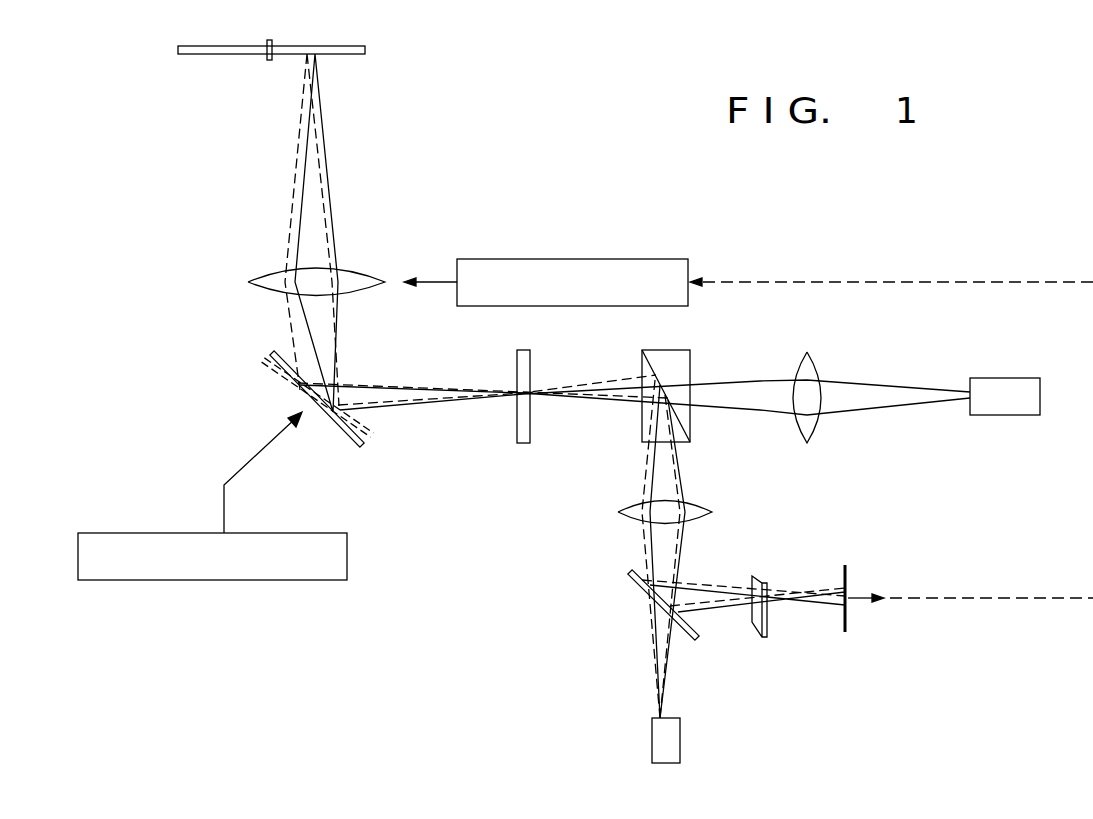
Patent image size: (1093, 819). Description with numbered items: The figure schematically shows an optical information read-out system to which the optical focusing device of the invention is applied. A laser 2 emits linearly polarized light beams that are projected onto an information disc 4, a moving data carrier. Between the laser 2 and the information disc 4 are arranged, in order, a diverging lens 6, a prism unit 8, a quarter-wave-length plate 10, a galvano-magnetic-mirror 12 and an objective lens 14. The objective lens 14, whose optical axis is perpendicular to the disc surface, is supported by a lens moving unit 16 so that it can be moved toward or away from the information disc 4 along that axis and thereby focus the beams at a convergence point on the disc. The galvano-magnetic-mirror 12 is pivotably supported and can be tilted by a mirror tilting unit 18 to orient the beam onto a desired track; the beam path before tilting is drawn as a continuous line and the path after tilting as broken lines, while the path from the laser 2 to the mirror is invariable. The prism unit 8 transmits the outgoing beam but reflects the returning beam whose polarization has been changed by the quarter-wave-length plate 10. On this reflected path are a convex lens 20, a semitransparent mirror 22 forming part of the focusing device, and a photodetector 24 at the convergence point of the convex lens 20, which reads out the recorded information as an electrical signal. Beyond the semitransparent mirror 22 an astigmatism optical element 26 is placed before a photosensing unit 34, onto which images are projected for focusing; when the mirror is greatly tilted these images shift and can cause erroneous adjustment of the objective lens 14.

The laser 2 is at (993, 386).
The information disc 4 is at (345, 55).
The diverging lens 6 is at (806, 368).
The prism unit 8 is at (682, 350).
The quarter-wave-length plate 10 is at (527, 350).
The galvano-magnetic-mirror 12 is at (330, 425).
The objective lens 14 is at (360, 282).
The lens moving unit 16 is at (653, 259).
The mirror tilting unit 18 is at (338, 568).
The convex lens 20 is at (695, 508).
The semitransparent mirror 22 is at (640, 584).
The photodetector 24 is at (680, 735).
The astigmatism optical element 26 is at (760, 576).
The photosensing unit 34 is at (838, 616).